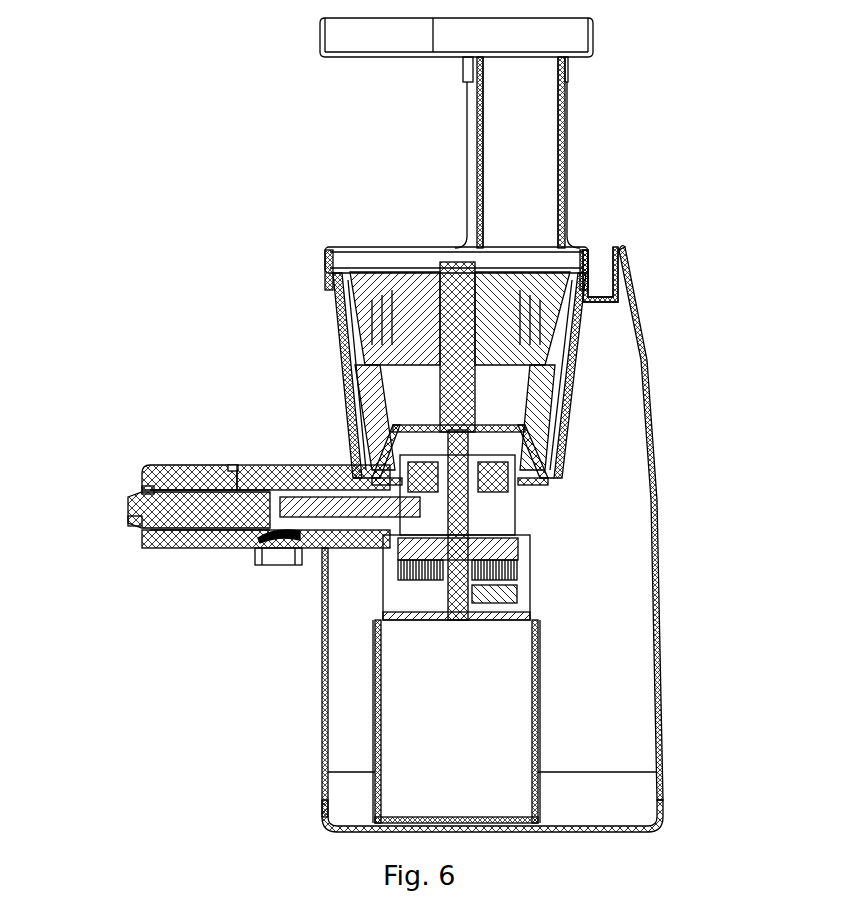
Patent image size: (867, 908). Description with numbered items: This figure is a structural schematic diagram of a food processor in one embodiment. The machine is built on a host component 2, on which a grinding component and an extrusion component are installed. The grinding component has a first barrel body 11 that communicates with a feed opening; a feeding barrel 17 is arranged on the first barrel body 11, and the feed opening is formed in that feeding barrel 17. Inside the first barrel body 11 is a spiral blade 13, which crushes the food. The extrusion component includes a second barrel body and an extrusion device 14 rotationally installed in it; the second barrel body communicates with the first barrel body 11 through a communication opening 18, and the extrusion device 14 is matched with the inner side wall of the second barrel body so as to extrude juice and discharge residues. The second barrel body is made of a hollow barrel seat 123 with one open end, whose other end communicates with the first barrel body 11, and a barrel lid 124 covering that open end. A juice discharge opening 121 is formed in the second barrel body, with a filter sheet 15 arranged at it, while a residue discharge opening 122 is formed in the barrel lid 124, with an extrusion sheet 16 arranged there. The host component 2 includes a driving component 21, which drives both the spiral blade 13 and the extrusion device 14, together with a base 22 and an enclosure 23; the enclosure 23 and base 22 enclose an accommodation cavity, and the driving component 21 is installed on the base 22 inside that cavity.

The host component 2 is at (766, 468).
The first barrel body 11 is at (340, 318).
The spiral blade 13 is at (505, 352).
The extrusion device 14 is at (175, 500).
The filter sheet 15 is at (283, 535).
The extrusion sheet 16 is at (148, 486).
The feeding barrel 17 is at (565, 153).
The communication opening 18 is at (368, 478).
The driving component 21 is at (475, 530).
The base 22 is at (662, 820).
The enclosure 23 is at (657, 475).
The juice discharge opening 121 is at (272, 547).
The residue discharge opening 122 is at (135, 524).
The barrel seat 123 is at (305, 470).
The barrel lid 124 is at (225, 470).